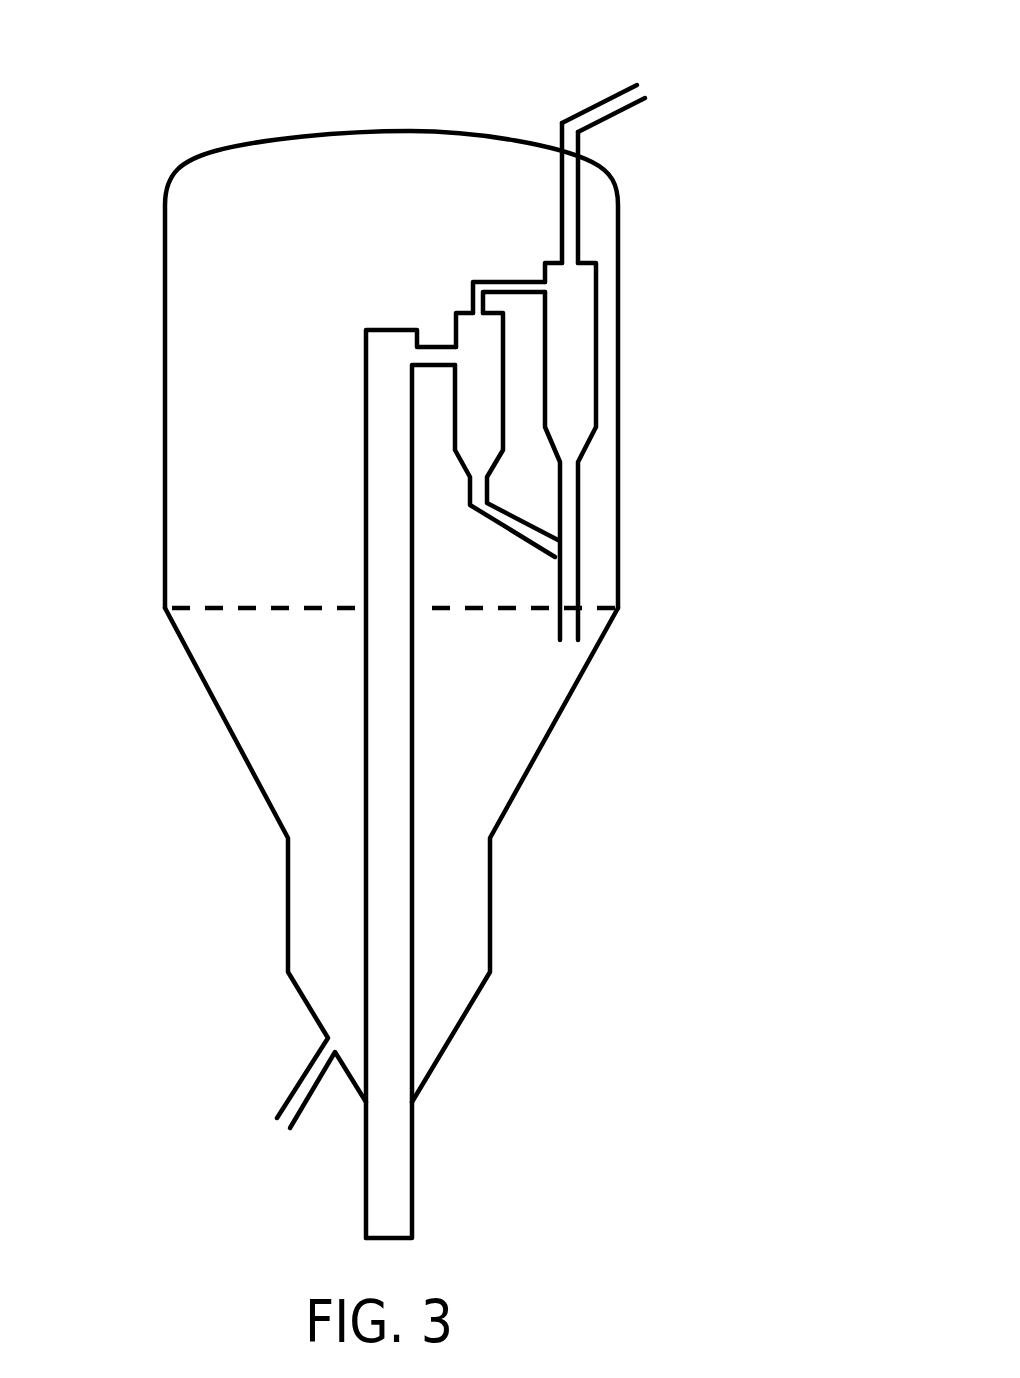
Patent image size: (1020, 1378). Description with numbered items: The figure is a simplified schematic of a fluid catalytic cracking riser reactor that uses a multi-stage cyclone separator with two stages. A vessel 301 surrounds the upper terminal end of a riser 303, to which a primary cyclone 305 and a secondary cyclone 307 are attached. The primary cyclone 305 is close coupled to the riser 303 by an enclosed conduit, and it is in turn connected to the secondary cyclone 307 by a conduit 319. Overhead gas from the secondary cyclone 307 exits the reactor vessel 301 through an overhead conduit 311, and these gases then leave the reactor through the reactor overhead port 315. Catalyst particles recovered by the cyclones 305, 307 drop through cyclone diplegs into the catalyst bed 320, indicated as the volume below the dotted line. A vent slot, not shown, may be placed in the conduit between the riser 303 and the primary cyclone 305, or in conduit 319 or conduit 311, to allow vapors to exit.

The vessel 301 is at (627, 588).
The riser 303 is at (380, 662).
The primary cyclone 305 is at (482, 417).
The secondary cyclone 307 is at (565, 337).
The overhead conduit 311 is at (567, 177).
The reactor overhead port 315 is at (645, 90).
The conduit 319 is at (513, 282).
The catalyst bed 320 is at (493, 800).